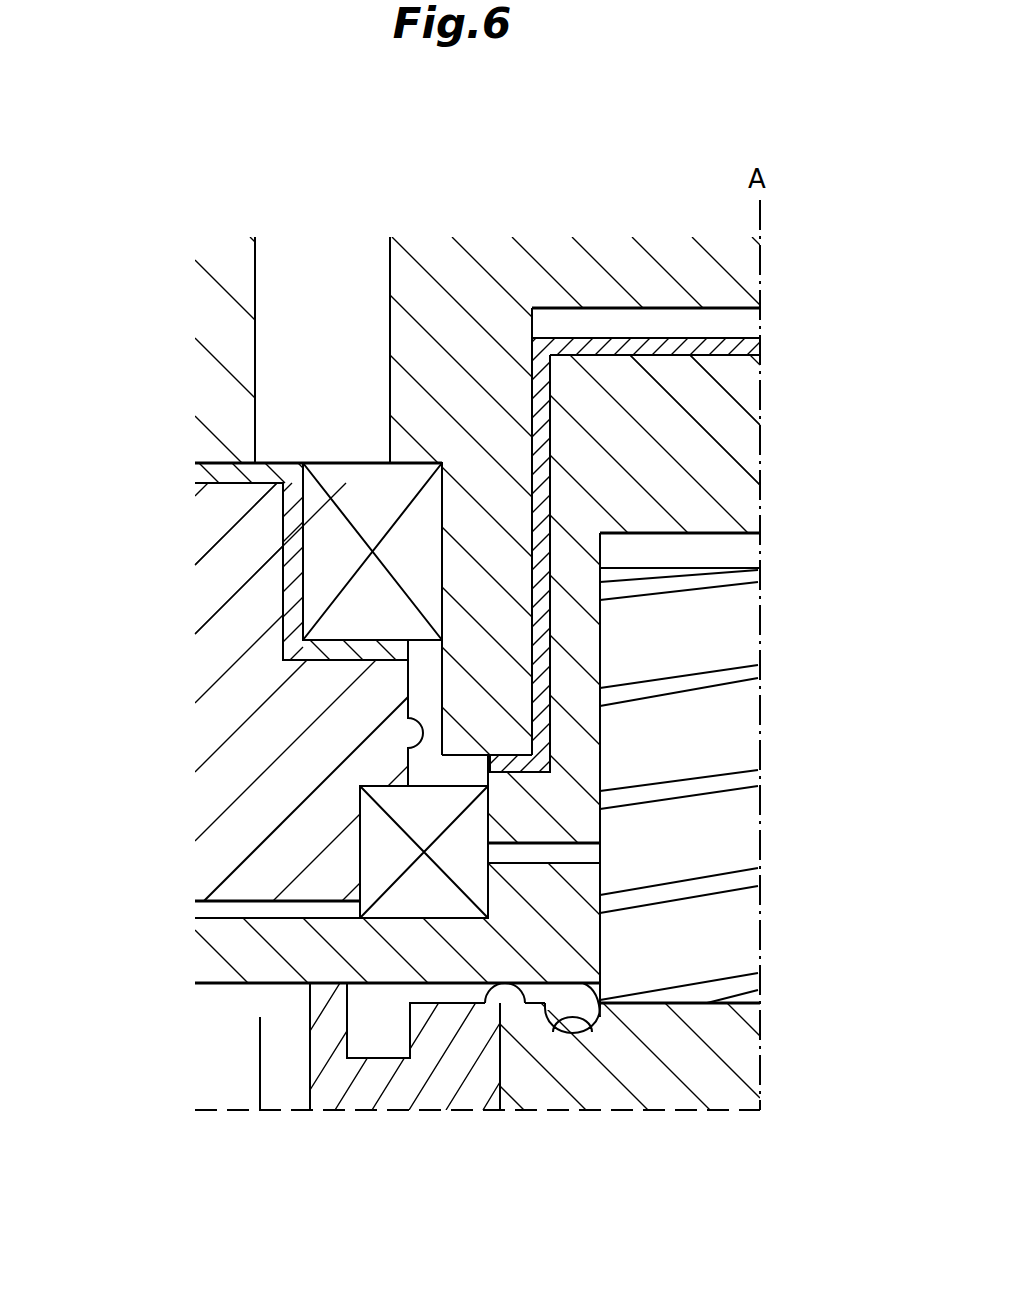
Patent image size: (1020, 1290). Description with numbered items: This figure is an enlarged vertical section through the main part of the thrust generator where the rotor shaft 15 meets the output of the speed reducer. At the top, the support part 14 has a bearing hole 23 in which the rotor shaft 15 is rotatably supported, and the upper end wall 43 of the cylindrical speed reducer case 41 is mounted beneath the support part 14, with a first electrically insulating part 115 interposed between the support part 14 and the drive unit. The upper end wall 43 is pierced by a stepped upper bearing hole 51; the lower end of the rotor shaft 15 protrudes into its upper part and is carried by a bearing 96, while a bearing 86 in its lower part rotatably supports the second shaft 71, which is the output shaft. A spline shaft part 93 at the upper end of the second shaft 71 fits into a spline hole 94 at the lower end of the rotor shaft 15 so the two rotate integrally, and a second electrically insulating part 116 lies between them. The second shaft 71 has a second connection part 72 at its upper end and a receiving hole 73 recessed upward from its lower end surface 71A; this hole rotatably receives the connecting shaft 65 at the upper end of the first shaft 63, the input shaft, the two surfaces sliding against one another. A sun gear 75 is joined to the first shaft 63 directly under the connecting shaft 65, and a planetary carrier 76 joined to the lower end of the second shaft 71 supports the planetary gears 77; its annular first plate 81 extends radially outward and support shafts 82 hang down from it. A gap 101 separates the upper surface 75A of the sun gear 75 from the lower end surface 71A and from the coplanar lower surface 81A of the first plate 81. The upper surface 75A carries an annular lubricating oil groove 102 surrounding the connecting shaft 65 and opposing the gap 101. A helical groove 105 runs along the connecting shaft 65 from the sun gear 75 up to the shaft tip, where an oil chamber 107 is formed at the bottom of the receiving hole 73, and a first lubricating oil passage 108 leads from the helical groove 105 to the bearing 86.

The support part 14 is at (217, 273).
The rotor shaft 15 is at (390, 258).
The bearing hole 23 is at (256, 262).
The speed reducer case 41 is at (213, 684).
The upper end wall 43 is at (215, 555).
The upper bearing hole 51 is at (407, 753).
The first shaft 63 is at (745, 946).
The connecting shaft 65 is at (742, 808).
The second shaft 71 is at (722, 410).
The lower end surface 71A is at (603, 1006).
The second connection part 72 is at (733, 467).
The receiving hole 73 is at (742, 536).
The sun gear 75 is at (640, 1080).
The upper surface 75A is at (485, 1003).
The planetary carrier 76 is at (185, 978).
The planetary gear 77 is at (440, 1095).
The first plate 81 is at (212, 935).
The lower surface 81A is at (375, 985).
The support shaft 82 is at (283, 1095).
The bearing 86 is at (372, 837).
The spline shaft part 93 is at (533, 427).
The spline hole 94 is at (533, 330).
The bearing 96 is at (352, 478).
The gap 101 is at (537, 995).
The lubricating oil groove 102 is at (592, 1032).
The helical groove 105 is at (755, 672).
The oil chamber 107 is at (690, 553).
The first lubricating oil passage 108 is at (565, 845).
The first electrically insulating part 115 is at (218, 471).
The second electrically insulating part 116 is at (742, 350).